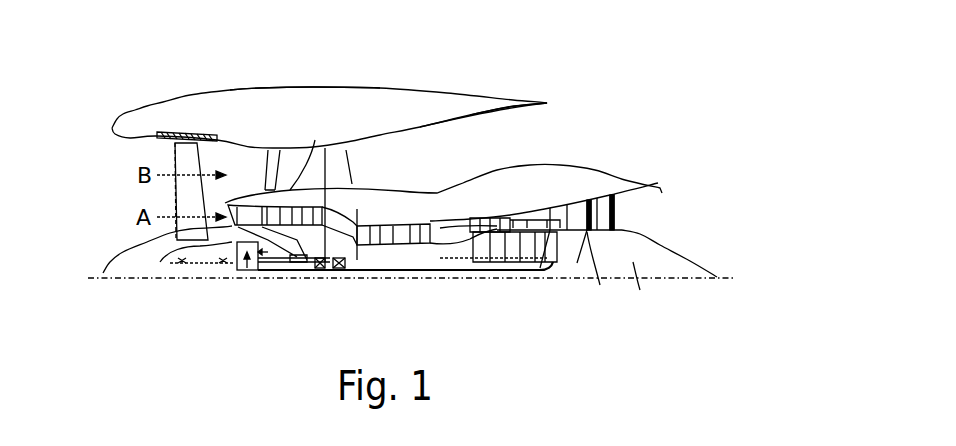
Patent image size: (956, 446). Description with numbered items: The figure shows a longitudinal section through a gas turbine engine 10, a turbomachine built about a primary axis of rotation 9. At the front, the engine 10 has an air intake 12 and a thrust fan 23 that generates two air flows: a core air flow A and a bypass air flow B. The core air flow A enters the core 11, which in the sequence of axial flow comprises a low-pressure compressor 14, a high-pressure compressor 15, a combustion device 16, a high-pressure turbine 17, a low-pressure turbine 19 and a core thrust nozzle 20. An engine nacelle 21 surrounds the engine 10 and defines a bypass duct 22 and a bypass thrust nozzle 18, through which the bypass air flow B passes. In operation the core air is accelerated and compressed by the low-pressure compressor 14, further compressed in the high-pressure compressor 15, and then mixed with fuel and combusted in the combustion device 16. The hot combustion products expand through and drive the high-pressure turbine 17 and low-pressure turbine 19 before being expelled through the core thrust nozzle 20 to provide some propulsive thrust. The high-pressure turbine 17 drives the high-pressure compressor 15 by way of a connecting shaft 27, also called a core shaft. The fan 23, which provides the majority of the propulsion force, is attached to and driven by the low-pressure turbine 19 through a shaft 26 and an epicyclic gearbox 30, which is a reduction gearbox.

The primary axis of rotation 9 is at (640, 290).
The gas turbine engine 10 is at (157, 103).
The core 11 is at (463, 207).
The air intake 12 is at (122, 153).
The low-pressure compressor 14 is at (315, 140).
The high-pressure compressor 15 is at (400, 222).
The combustion device 16 is at (447, 271).
The high-pressure turbine 17 is at (497, 229).
The bypass thrust nozzle 18 is at (620, 100).
The low-pressure turbine 19 is at (600, 285).
The core thrust nozzle 20 is at (657, 218).
The engine nacelle 21 is at (340, 87).
The bypass duct 22 is at (540, 135).
The thrust fan 23 is at (170, 208).
The shaft 26 is at (373, 271).
The shaft 27 is at (423, 271).
The epicyclic gearbox 30 is at (245, 272).